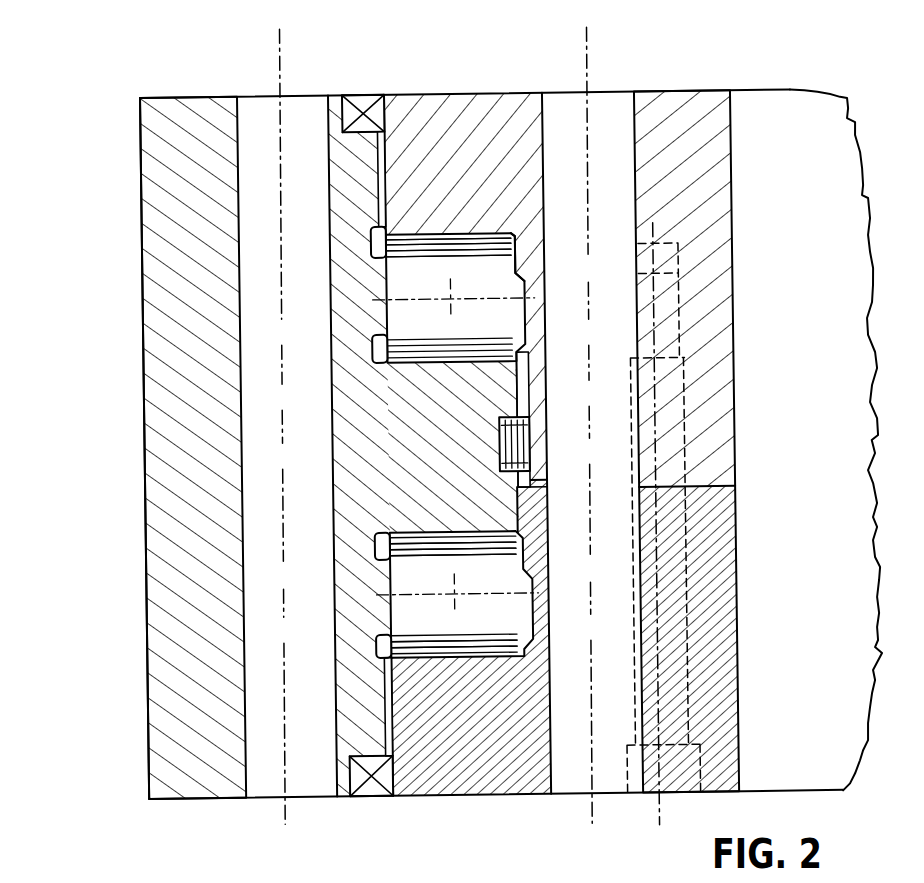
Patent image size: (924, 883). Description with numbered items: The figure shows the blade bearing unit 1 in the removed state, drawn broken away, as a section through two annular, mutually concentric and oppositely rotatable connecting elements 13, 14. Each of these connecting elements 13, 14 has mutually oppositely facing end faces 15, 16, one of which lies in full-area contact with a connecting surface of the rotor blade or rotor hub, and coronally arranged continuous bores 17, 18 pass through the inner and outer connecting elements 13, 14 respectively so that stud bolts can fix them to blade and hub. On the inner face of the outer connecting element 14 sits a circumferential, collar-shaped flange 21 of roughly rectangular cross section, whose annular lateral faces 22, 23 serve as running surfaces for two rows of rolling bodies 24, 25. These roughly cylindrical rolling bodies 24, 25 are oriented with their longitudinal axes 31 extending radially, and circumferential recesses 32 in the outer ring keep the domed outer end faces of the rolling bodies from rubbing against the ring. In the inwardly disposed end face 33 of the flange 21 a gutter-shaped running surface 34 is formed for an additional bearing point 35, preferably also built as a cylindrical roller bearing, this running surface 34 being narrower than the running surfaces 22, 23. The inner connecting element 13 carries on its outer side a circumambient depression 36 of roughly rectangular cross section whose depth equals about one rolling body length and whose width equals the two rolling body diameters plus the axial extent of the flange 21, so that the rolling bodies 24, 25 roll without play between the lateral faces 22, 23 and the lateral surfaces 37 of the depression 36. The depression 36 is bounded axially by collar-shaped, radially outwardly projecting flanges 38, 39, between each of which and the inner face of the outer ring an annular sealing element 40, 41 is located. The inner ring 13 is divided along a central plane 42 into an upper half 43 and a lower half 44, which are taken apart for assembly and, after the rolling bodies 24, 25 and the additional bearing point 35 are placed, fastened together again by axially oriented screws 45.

The bearing unit 1 is at (126, 152).
The inner connecting element 13 is at (521, 82).
The outer connecting element 14 is at (192, 125).
The end face 15 is at (684, 100).
The end face 16 is at (185, 799).
The continuous bore 17 is at (582, 799).
The continuous bore 18 is at (277, 799).
The flange 21 is at (485, 390).
The lateral face 22 is at (517, 350).
The lateral face 23 is at (527, 540).
The rolling body 24 is at (400, 320).
The rolling body 25 is at (400, 620).
The longitudinal axis 31 is at (515, 281).
The circumferential recess 32 is at (462, 544).
The inwardly disposed end face 33 is at (527, 408).
The running surface 34 is at (494, 441).
The additional bearing point 35 is at (527, 452).
The depression 36 is at (515, 646).
The lateral surface 37 is at (471, 242).
The flange 38 is at (434, 120).
The flange 39 is at (458, 775).
The sealing element 40 is at (356, 118).
The sealing element 41 is at (350, 799).
The central plane 42 is at (728, 478).
The upper half 43 is at (712, 176).
The lower half 44 is at (715, 637).
The screw 45 is at (682, 322).